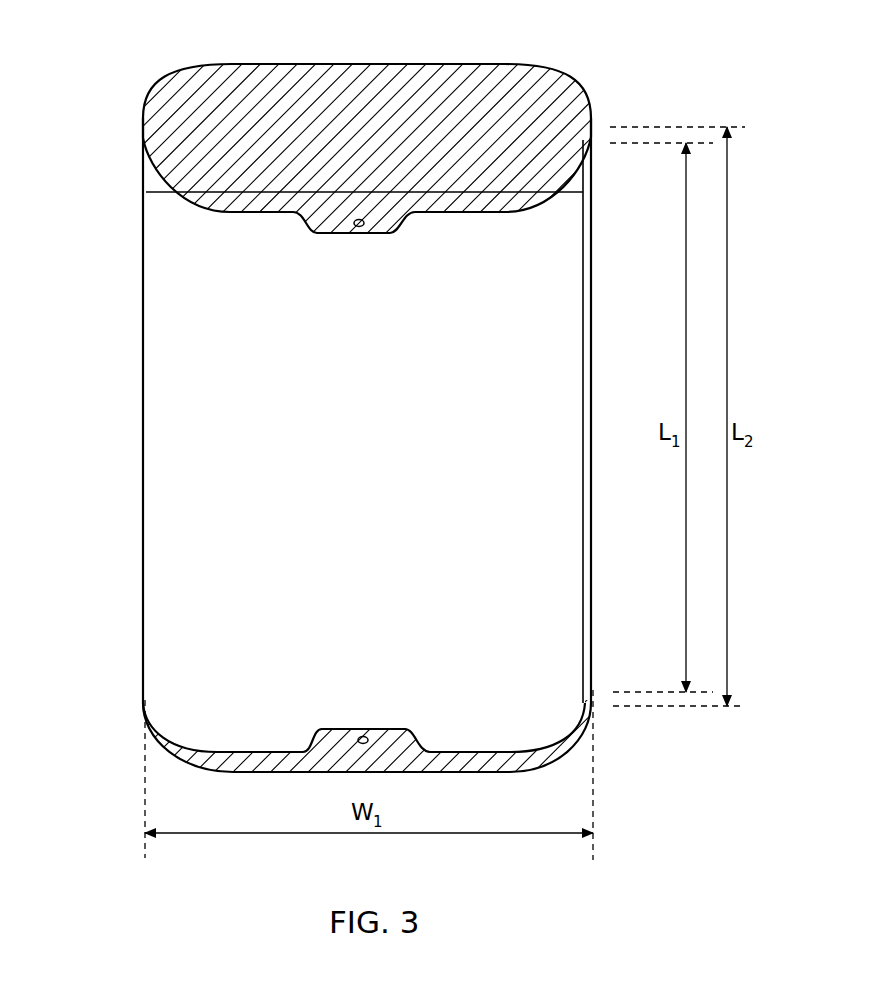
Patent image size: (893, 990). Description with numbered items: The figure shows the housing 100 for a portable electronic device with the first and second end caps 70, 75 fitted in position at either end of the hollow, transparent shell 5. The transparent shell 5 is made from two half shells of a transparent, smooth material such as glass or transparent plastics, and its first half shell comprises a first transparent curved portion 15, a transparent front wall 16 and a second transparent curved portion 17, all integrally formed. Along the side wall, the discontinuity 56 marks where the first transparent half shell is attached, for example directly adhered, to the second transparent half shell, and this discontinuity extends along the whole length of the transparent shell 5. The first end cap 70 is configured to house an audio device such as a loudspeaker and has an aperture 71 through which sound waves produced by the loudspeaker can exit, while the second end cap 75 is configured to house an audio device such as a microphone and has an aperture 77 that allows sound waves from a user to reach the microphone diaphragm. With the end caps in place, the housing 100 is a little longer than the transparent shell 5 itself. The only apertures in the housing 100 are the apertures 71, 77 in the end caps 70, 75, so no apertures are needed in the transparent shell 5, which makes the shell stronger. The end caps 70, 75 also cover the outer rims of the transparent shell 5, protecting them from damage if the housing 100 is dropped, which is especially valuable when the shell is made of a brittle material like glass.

The transparent shell 5 is at (106, 562).
The first transparent curved portion 15 is at (170, 391).
The transparent front wall 16 is at (364, 385).
The second transparent curved portion 17 is at (560, 373).
The discontinuity 56 is at (586, 288).
The first end cap 70 is at (534, 55).
The aperture 71 is at (355, 229).
The second end cap 75 is at (509, 778).
The aperture 77 is at (358, 736).
The housing 100 is at (654, 785).